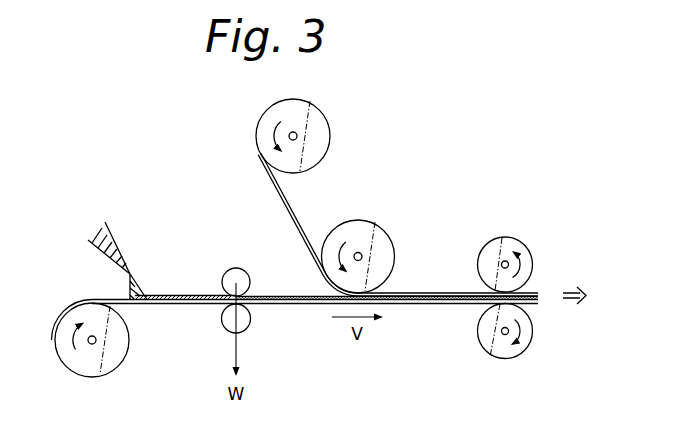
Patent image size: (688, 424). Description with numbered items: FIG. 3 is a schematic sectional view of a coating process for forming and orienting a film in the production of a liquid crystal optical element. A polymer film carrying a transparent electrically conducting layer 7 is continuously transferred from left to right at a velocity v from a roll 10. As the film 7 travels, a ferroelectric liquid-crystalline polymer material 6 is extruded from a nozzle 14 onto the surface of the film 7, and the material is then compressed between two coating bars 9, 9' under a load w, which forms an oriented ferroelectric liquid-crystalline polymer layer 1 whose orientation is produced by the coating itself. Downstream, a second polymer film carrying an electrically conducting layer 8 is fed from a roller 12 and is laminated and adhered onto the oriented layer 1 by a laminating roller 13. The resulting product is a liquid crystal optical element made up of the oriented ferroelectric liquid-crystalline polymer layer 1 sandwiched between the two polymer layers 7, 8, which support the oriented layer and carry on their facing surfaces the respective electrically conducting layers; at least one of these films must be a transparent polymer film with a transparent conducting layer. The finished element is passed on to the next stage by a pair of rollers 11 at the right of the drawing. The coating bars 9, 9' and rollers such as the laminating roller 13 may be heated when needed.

The oriented ferroelectric liquid-crystalline polymer layer 1 is at (287, 296).
The ferroelectric liquid-crystalline polymer material 6 is at (153, 294).
The polymer film carrying a transparent electrically conducting layer 7 is at (107, 299).
The polymer film carrying electrically conducting layer 8 is at (296, 213).
The coating bar 9 is at (236, 259).
The coating bar 9' is at (218, 330).
The roll 10 is at (112, 373).
The take-off rollers 11 is at (520, 240).
The roller 12 is at (332, 122).
The laminating roller 13 is at (380, 228).
The nozzle 14 is at (106, 226).